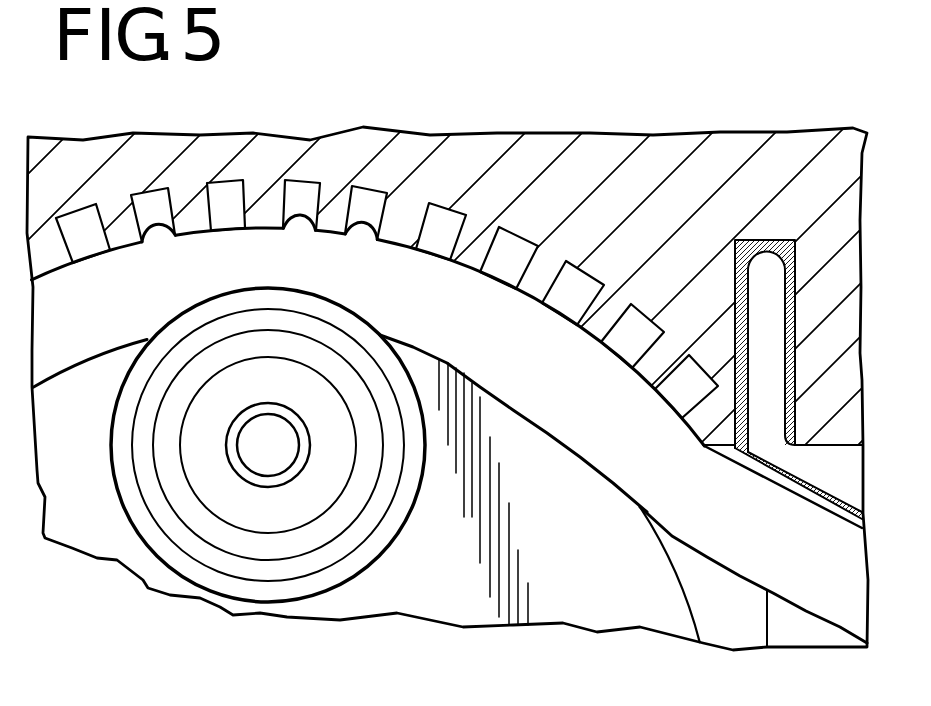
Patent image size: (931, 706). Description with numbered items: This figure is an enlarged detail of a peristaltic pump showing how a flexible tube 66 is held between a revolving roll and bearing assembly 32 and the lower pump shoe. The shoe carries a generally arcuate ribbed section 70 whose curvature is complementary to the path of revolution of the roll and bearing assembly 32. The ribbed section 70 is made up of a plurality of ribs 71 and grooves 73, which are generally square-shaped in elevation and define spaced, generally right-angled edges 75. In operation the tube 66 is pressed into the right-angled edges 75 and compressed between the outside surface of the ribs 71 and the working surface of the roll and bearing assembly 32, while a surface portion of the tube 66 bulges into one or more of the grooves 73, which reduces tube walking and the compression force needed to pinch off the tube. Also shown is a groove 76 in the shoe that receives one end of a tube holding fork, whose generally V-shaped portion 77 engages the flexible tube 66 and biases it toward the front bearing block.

The roll and bearing assembly 32 is at (352, 585).
The flexible tube 66 is at (758, 538).
The arcuate ribbed section 70 is at (527, 196).
The rib 71 is at (597, 320).
The groove 73 is at (160, 218).
The right-angled edge 75 is at (143, 250).
The groove 76 is at (777, 240).
The V-shaped portion 77 is at (788, 358).